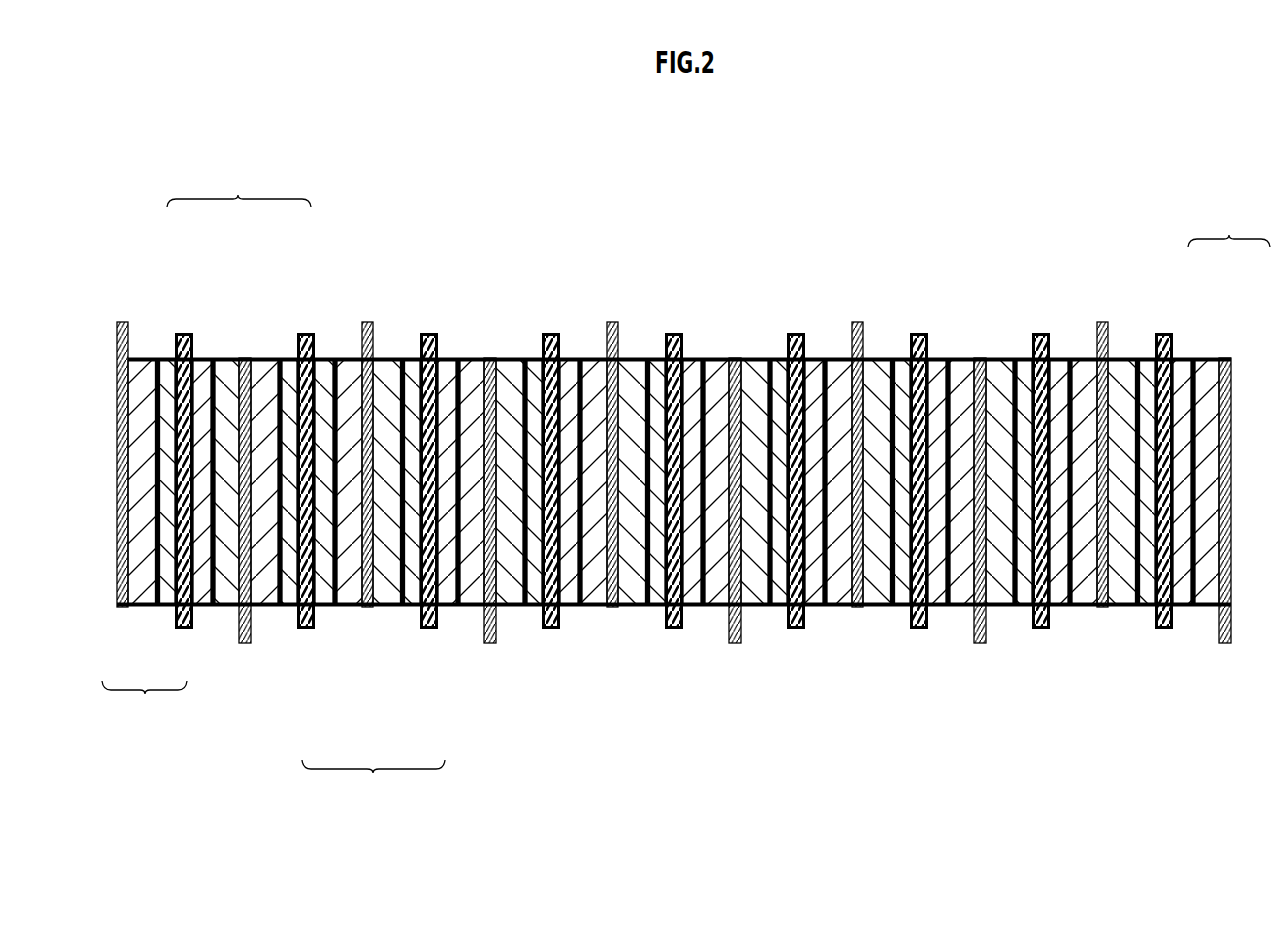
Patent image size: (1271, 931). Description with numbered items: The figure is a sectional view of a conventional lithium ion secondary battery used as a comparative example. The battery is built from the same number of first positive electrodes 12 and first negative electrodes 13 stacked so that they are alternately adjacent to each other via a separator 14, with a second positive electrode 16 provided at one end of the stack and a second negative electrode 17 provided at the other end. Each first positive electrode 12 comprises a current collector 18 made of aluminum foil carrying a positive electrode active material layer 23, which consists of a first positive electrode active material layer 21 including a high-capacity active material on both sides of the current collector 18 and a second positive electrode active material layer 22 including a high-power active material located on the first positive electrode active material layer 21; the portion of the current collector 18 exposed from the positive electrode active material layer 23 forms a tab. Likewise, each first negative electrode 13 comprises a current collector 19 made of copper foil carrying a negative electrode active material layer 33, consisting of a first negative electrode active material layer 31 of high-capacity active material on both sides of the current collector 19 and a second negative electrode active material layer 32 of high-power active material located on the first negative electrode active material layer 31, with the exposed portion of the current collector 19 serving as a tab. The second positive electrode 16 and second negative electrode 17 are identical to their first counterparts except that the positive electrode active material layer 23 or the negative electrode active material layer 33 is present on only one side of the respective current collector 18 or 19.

The first positive electrode 12 is at (718, 402).
The first negative electrode 13 is at (628, 571).
The separator 14 is at (184, 333).
The second positive electrode 16 is at (1228, 185).
The second negative electrode 17 is at (144, 734).
The current collector 18 is at (247, 645).
The current collector 19 is at (123, 322).
The first positive electrode active material layer 21 is at (227, 357).
The second positive electrode active material layer 22 is at (203, 357).
The positive electrode active material layer 23 is at (994, 244).
The first negative electrode active material layer 31 is at (140, 608).
The second negative electrode active material layer 32 is at (171, 608).
The negative electrode active material layer 33 is at (273, 742).